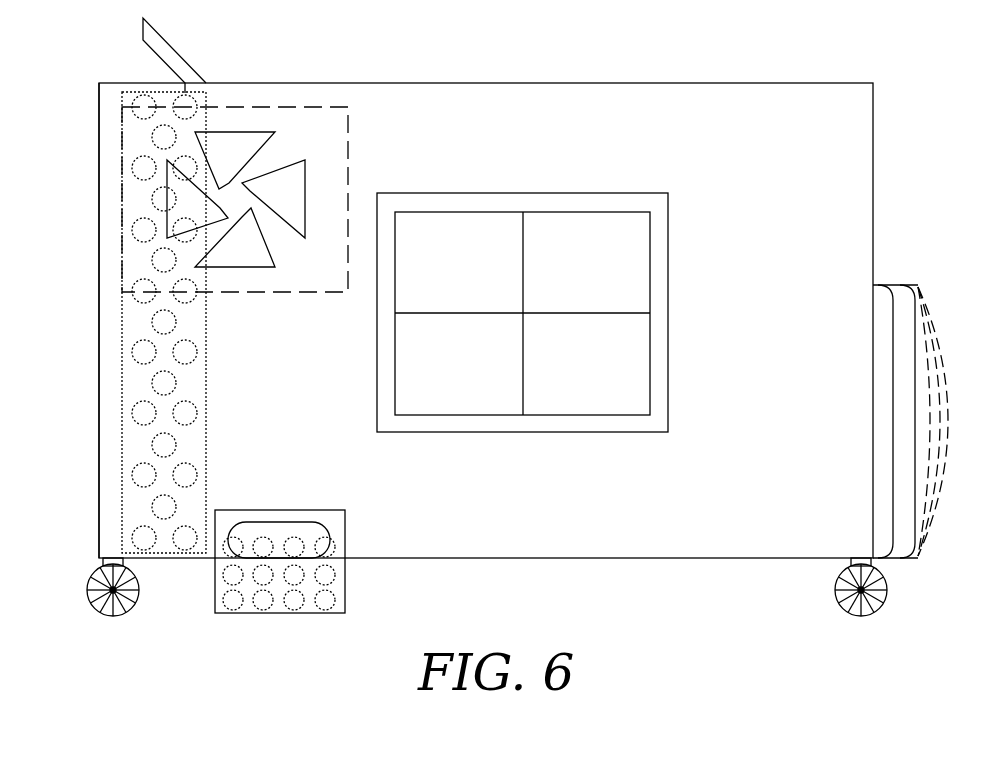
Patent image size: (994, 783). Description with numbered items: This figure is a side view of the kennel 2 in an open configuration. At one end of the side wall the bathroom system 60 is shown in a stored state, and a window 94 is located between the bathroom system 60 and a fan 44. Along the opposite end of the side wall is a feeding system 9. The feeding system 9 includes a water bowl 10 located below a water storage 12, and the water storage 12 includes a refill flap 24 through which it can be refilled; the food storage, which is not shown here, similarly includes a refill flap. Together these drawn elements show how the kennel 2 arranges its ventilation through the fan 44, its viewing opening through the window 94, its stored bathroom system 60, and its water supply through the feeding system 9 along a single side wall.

The kennel 2 is at (803, 60).
The feeding system 9 is at (89, 98).
The water bowl 10 is at (228, 600).
The water storage 12 is at (123, 346).
The refill flap 24 is at (150, 33).
The fan 44 is at (326, 107).
The bathroom system 60 is at (907, 267).
The window 94 is at (594, 194).